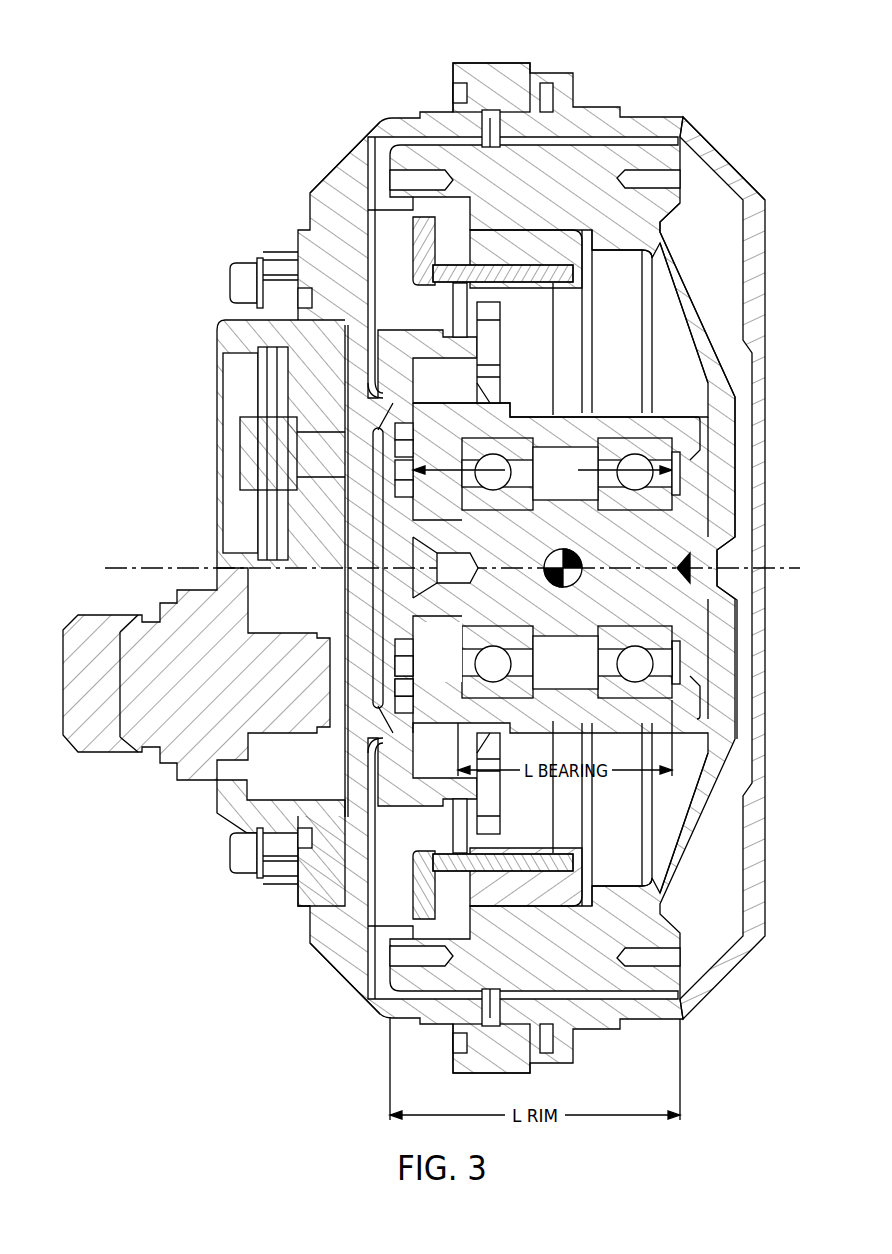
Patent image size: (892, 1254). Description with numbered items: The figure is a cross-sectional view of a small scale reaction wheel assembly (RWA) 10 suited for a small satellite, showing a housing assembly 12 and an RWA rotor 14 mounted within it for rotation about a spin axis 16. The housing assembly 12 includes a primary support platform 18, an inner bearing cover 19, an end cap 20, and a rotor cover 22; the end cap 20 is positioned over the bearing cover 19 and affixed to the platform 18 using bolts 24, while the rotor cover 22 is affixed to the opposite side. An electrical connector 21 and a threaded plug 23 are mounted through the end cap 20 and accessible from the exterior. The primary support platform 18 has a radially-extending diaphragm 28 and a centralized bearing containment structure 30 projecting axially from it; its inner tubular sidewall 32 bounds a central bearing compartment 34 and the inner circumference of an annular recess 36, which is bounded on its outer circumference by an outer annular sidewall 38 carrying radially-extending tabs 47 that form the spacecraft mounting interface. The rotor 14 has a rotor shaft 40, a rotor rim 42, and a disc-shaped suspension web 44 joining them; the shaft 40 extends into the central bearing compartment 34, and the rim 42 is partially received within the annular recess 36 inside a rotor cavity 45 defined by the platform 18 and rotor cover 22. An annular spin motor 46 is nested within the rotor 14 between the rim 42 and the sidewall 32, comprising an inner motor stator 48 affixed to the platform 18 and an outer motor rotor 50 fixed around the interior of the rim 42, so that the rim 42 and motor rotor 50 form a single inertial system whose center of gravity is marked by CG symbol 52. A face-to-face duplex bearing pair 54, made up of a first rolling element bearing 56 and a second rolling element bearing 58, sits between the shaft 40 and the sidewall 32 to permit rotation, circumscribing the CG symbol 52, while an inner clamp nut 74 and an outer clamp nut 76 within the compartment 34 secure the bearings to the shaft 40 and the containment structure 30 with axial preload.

The Reaction Wheel Assembly (RWA) 10 is at (193, 138).
The housing assembly 12 is at (754, 185).
The RWA rotor 14 is at (699, 308).
The spin axis 16 is at (172, 568).
The primary support platform 18 is at (345, 963).
The inner bearing cover 19 is at (372, 493).
The end cap 20 is at (217, 333).
The electrical connector 21 is at (196, 699).
The rotor cover 22 is at (718, 152).
The threaded plug 23 is at (238, 443).
The bolts 24 is at (243, 263).
The radially-extending diaphragm 28 is at (342, 160).
The centralized bearing containment structure 30 is at (550, 423).
The inner tubular sidewall 32 is at (616, 416).
The central bearing compartment 34 is at (707, 568).
The annular recess 36 is at (368, 268).
The outer annular sidewall 38 is at (420, 116).
The rotor shaft 40 is at (634, 557).
The rotor rim 42 is at (513, 197).
The suspension web 44 is at (692, 830).
The rotor cavity 45 is at (694, 207).
The spin motor 46 is at (578, 905).
The radially-extending tabs 47 is at (505, 62).
The inner motor stator 48 is at (531, 282).
The outer motor rotor 50 is at (563, 247).
The CG symbol 52 is at (563, 549).
The duplex bearing pair 54 is at (667, 440).
The first rolling element bearing 56 is at (494, 626).
The second rolling element bearing 58 is at (630, 626).
The inner clamp nut 74 is at (418, 650).
The outer clamp nut 76 is at (418, 682).